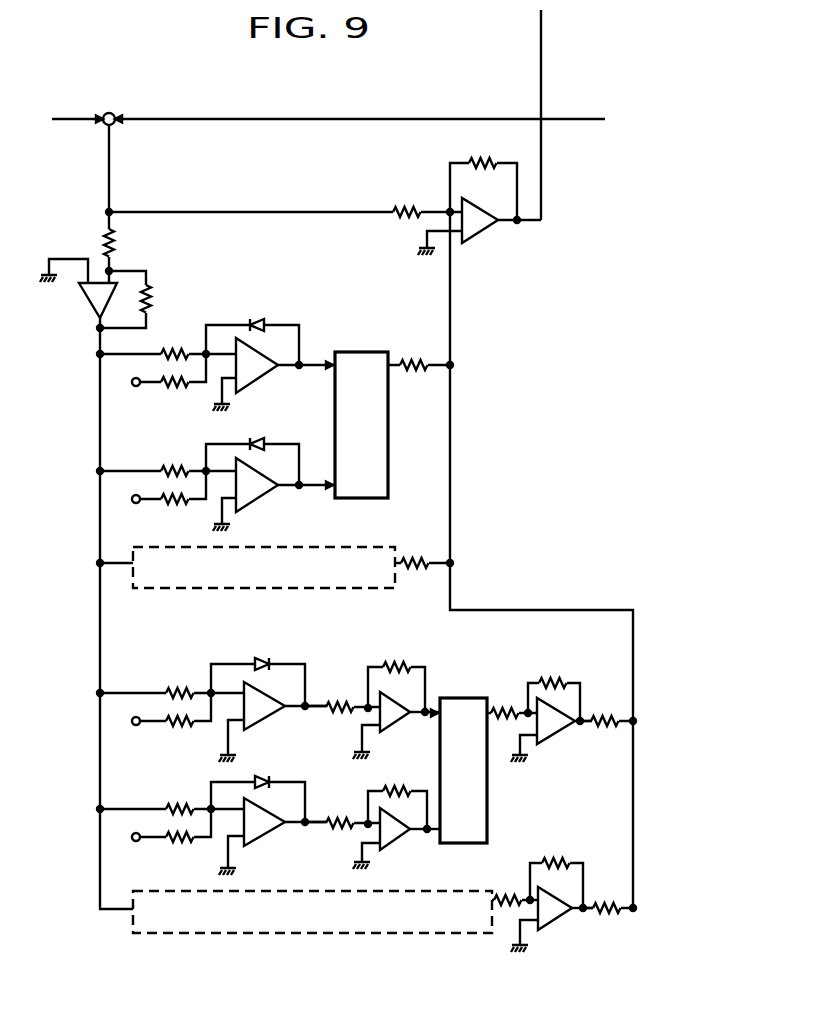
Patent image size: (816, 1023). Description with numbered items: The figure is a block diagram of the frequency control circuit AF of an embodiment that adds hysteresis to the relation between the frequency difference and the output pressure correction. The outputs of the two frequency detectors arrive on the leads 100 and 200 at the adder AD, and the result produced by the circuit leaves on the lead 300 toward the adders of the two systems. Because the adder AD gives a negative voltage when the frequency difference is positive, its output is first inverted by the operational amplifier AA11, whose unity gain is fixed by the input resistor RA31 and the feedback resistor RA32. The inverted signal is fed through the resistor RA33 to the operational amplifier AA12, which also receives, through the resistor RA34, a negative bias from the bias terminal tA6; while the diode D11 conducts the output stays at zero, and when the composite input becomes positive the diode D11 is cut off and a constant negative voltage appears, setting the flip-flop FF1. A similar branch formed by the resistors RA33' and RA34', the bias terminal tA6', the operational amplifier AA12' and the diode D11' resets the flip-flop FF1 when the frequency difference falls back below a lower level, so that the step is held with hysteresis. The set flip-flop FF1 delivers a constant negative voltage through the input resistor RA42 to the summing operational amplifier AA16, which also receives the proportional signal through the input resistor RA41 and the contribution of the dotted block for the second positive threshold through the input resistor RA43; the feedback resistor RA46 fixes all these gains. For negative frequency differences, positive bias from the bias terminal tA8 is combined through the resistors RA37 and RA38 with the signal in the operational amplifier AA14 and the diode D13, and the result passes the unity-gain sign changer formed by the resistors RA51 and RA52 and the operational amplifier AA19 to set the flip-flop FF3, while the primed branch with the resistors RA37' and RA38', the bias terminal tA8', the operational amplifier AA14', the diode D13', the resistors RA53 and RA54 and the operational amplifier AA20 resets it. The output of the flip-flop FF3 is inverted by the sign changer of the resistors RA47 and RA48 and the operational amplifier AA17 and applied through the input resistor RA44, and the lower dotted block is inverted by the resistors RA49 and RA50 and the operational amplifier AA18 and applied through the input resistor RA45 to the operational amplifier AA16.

The lead 100 is at (78, 124).
The lead 200 is at (585, 121).
The lead 300 is at (541, 82).
The adder AD is at (110, 113).
The frequency control circuit AF is at (414, 94).
The input resistor RA31 is at (112, 225).
The feedback resistor RA32 is at (150, 281).
The operational amplifier AA11 is at (96, 307).
The resistor RA33 is at (168, 342).
The resistor RA34 is at (173, 380).
The bias terminal tA6 is at (124, 383).
The operational amplifier AA12 is at (274, 375).
The diode D11 is at (252, 329).
The resistor RA33' is at (168, 459).
The resistor RA34' is at (173, 497).
The bias terminal tA6' is at (124, 500).
The operational amplifier AA12' is at (274, 495).
The diode D11' is at (252, 449).
The flip-flop FF1 is at (338, 336).
The input resistor RA42 is at (394, 368).
The input resistor RA41 is at (380, 217).
The feedback resistor RA46 is at (458, 160).
The operational amplifier AA16 is at (492, 228).
The input resistor RA43 is at (396, 564).
The resistor RA37 is at (172, 682).
The resistor RA38 is at (175, 719).
The bias terminal tA8 is at (124, 722).
The operational amplifier AA14 is at (272, 722).
The diode D13 is at (258, 669).
The resistor RA51 is at (356, 700).
The resistor RA52 is at (368, 670).
The operational amplifier AA19 is at (404, 722).
The resistor RA37' is at (172, 798).
The resistor RA38' is at (176, 835).
The bias terminal tA8' is at (124, 838).
The operational amplifier AA14' is at (272, 836).
The diode D13' is at (258, 786).
The resistor RA53 is at (356, 816).
The resistor RA54 is at (368, 794).
The operational amplifier AA20 is at (404, 838).
The flip-flop FF3 is at (441, 684).
The resistor RA47 is at (498, 702).
The resistor RA48 is at (528, 686).
The operational amplifier AA17 is at (566, 732).
The input resistor RA44 is at (622, 734).
The resistor RA49 is at (524, 900).
The resistor RA50 is at (528, 864).
The operational amplifier AA18 is at (564, 918).
The input resistor RA45 is at (624, 921).